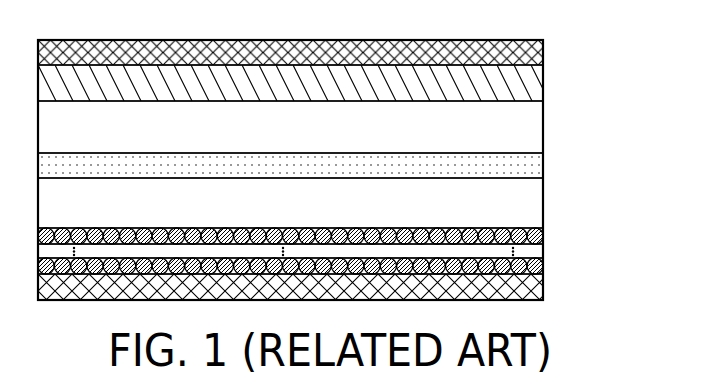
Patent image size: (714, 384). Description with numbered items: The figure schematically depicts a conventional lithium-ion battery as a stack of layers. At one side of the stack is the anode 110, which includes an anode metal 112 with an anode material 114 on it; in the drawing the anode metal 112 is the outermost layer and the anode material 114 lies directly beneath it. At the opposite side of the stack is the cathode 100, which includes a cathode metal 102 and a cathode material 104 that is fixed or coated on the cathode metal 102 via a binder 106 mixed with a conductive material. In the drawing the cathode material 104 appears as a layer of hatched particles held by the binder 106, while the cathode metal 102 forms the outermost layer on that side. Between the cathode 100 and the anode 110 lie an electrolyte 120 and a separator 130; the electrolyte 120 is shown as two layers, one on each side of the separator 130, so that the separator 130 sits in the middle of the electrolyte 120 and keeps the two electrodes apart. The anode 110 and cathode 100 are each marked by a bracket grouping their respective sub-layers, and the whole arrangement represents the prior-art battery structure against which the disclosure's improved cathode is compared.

The cathode 100 is at (349, 253).
The cathode metal 102 is at (543, 287).
The cathode material 104 is at (543, 237).
The binder 106 is at (540, 255).
The anode 110 is at (349, 63).
The anode metal 112 is at (543, 53).
The anode material 114 is at (543, 82).
The electrolyte 120 is at (540, 133).
The separator 130 is at (543, 168).